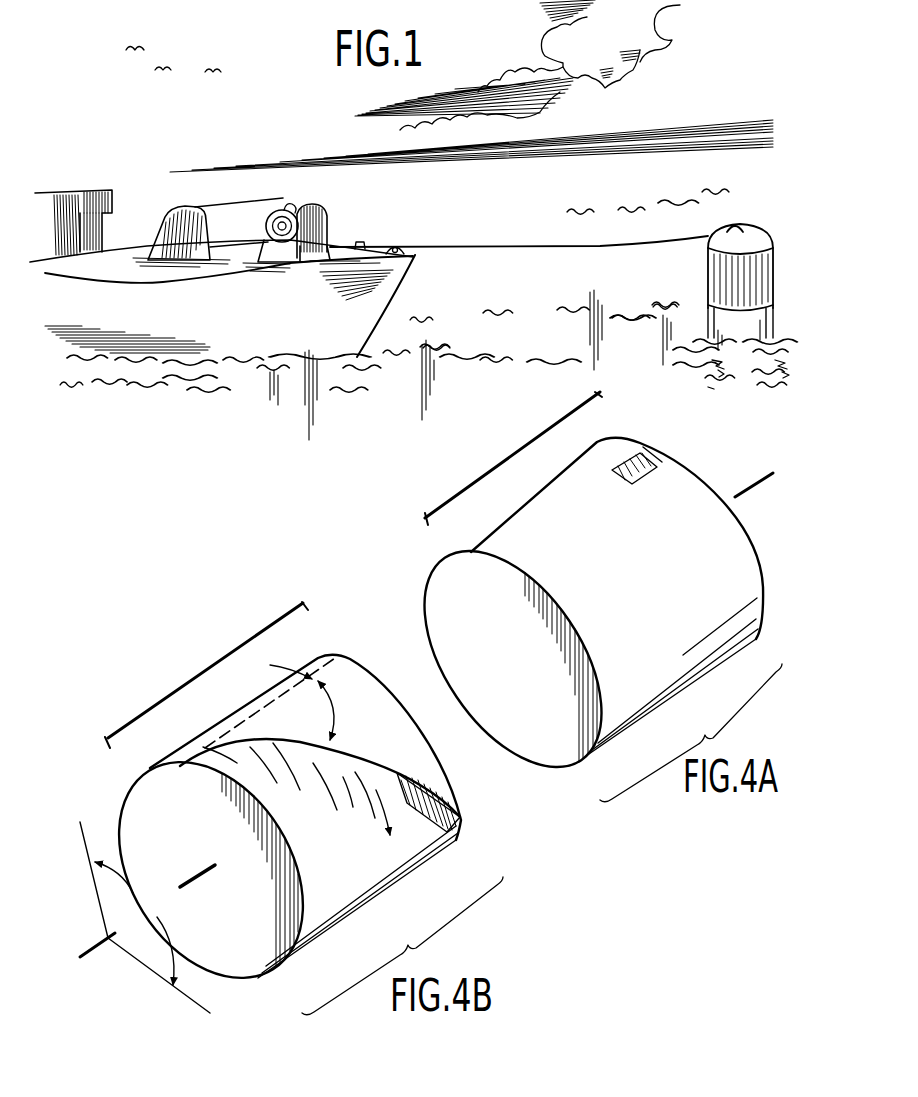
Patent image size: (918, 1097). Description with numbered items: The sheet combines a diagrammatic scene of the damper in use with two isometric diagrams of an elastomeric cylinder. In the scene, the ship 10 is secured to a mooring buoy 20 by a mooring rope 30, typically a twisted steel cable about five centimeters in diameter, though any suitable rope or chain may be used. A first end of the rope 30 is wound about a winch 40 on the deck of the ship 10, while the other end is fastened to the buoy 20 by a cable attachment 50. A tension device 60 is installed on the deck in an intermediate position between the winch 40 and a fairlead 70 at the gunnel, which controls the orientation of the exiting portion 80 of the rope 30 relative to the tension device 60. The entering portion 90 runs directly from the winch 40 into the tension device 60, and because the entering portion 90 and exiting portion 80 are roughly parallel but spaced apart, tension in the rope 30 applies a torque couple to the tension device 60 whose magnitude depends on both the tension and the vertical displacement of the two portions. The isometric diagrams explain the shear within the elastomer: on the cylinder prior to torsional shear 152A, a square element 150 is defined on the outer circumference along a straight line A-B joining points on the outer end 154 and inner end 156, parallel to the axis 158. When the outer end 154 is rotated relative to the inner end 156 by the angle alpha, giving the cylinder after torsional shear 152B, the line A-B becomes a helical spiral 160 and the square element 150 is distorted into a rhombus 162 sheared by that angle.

In FIG. 1, the ship 10 is at (360, 325).
In FIG. 1, the mooring buoy 20 is at (715, 275).
In FIG. 1, the mooring rope 30 is at (522, 245).
In FIG. 1, the winch 40 is at (170, 208).
In FIG. 1, the cable attachment 50 is at (750, 232).
In FIG. 1, the tension device 60 is at (322, 212).
In FIG. 1, the fairlead 70 is at (402, 250).
In FIG. 1, the exiting portion 80 is at (360, 246).
In FIG. 1, the entering portion 90 is at (242, 207).
In FIG. 4A, the square element 150 is at (665, 455).
In FIG. 4A, the cylinder prior to torsional shear 152A is at (510, 453).
In FIG. 4B, the cylinder after torsional shear 152B is at (214, 667).
In FIG. 4A, the outer end 154 is at (604, 746).
In FIG. 4B, the outer end 154 is at (240, 965).
In FIG. 4A, the inner end 156 is at (765, 600).
In FIG. 4B, the inner end 156 is at (392, 674).
In FIG. 4A, the axis 158 is at (750, 494).
In FIG. 4B, the axis 158 is at (104, 937).
In FIG. 4B, the helical spiral 160 is at (377, 762).
In FIG. 4B, the rhombus 162 is at (452, 830).